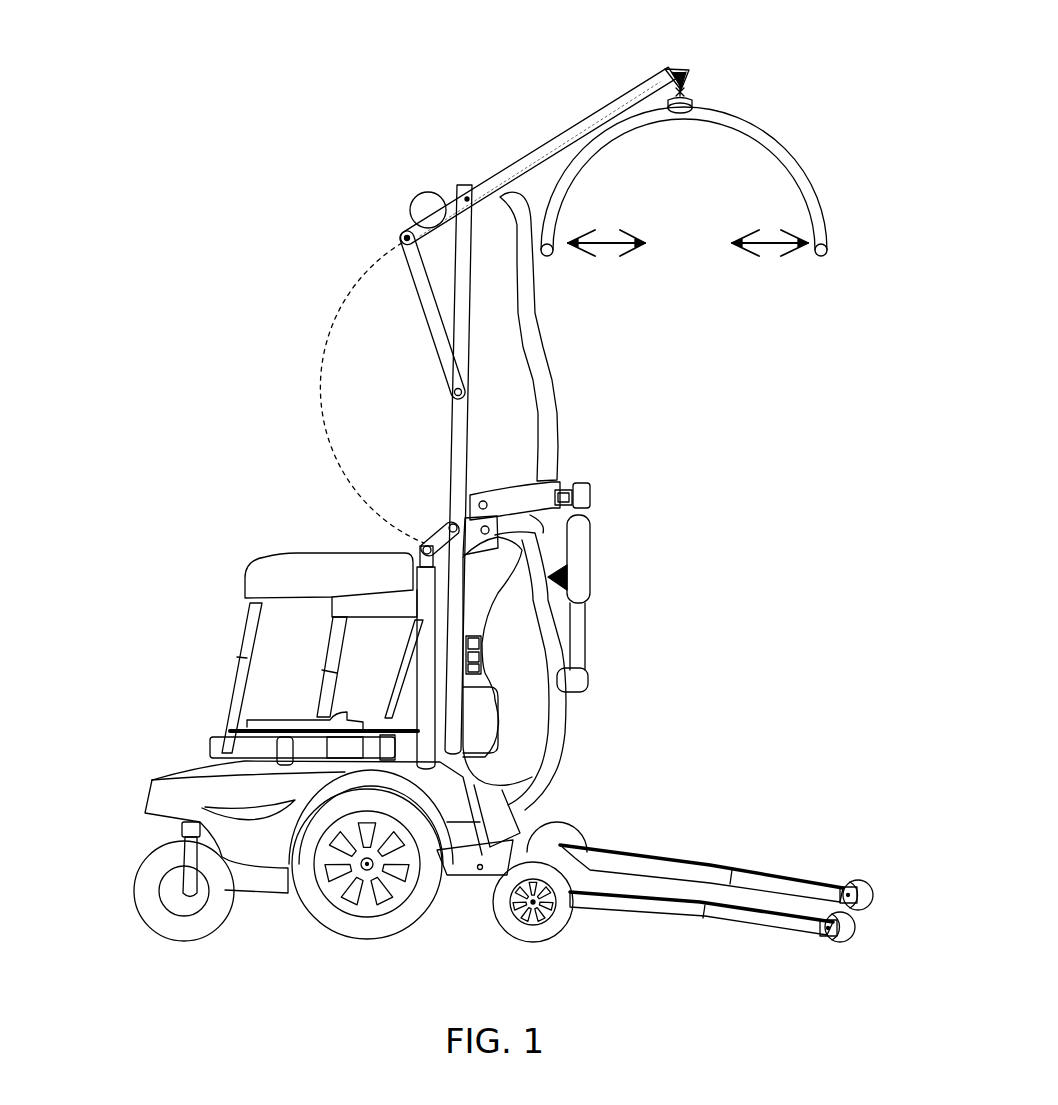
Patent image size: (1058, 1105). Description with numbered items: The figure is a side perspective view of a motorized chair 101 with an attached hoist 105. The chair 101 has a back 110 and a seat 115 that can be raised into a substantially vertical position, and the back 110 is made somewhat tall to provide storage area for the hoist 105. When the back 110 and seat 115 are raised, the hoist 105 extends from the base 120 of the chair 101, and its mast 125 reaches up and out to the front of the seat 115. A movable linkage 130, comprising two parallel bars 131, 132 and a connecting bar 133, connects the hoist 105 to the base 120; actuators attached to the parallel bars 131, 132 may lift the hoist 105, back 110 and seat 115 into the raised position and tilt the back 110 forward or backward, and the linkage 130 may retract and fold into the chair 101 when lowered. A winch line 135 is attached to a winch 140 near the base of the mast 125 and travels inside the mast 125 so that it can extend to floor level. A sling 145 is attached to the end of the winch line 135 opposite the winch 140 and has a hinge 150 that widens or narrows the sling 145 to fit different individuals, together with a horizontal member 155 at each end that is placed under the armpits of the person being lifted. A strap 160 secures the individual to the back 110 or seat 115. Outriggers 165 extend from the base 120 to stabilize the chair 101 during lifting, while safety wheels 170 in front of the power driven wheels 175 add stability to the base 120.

The motorized chair 101 is at (503, 480).
The hoist 105 is at (457, 423).
The back 110 is at (527, 422).
The seat 115 is at (513, 650).
The base 120 is at (280, 808).
The mast 125 is at (533, 158).
The movable linkage 130 is at (407, 677).
The parallel bar 131 is at (450, 615).
The parallel bar 132 is at (427, 637).
The connecting bar 133 is at (424, 533).
The winch line 135 is at (667, 80).
The winch 140 is at (410, 200).
The sling 145 is at (778, 147).
The hinge 150 is at (684, 104).
The horizontal member 155 is at (825, 257).
The strap 160 is at (577, 503).
The outrigger 165 is at (730, 910).
The safety wheel 170 is at (540, 880).
The power driven wheel 175 is at (365, 872).